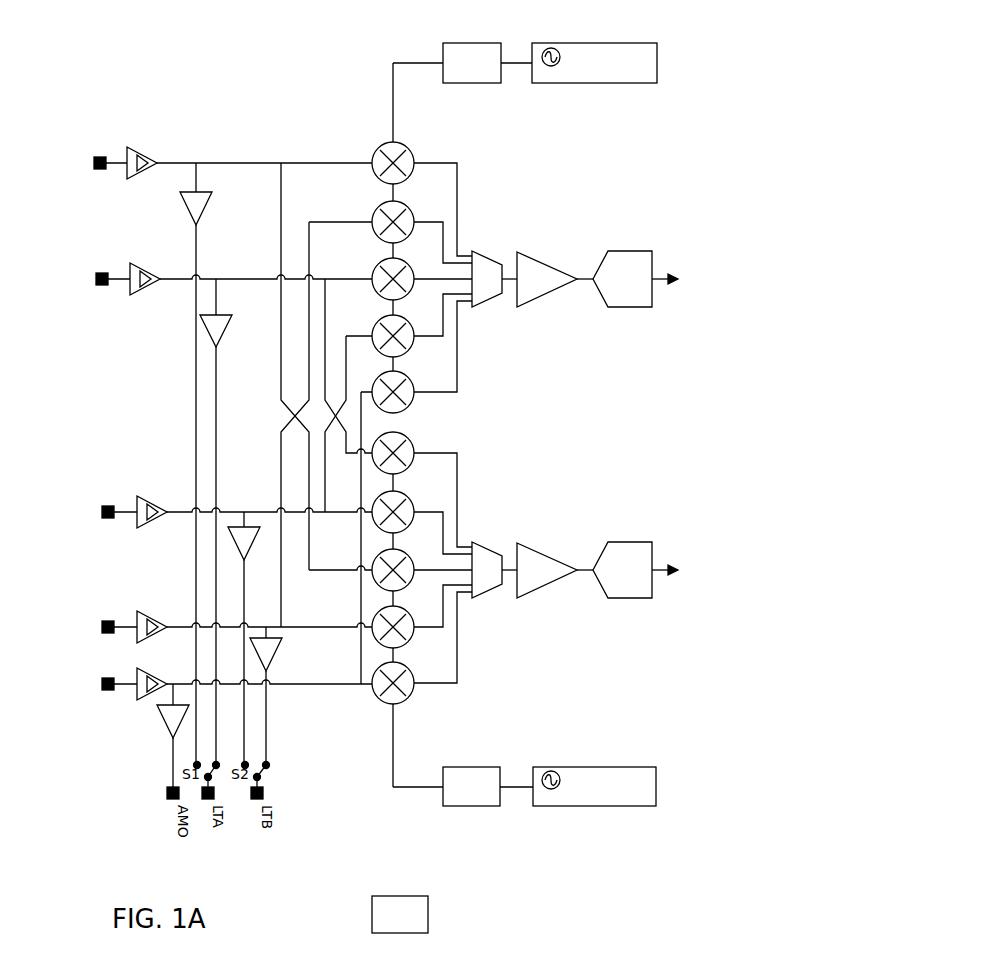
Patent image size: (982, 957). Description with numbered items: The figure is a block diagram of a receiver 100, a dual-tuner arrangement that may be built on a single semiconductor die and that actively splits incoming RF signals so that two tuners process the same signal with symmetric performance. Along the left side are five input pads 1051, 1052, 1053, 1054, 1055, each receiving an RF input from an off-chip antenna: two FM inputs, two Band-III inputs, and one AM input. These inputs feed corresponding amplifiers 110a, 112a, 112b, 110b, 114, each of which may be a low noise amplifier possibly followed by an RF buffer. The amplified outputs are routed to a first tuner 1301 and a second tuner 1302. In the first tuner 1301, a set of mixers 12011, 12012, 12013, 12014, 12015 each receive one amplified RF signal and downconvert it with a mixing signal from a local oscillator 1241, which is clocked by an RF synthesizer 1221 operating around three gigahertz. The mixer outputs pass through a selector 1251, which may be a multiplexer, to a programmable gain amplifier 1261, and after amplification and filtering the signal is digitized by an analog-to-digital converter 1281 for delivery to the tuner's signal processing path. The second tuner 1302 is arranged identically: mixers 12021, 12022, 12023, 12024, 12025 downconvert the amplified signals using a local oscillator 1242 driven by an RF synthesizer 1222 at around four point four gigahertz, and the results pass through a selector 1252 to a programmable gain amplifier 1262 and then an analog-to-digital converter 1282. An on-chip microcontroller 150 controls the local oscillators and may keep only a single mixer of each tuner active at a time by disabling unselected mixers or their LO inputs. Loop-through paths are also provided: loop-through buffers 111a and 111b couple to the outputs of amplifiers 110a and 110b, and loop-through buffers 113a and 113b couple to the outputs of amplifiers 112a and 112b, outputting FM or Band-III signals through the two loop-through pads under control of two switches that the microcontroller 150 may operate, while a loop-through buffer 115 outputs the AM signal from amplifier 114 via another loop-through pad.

The receiver 100 is at (119, 50).
The input pad 1051 is at (94, 163).
The input pad 1052 is at (96, 279).
The input pad 1053 is at (102, 512).
The input pad 1054 is at (102, 627).
The input pad 1055 is at (102, 684).
The amplifier 110a is at (140, 179).
The amplifier 110b is at (150, 643).
The loop-through buffer 111a is at (207, 207).
The loop-through buffer 111b is at (276, 650).
The amplifier 112a is at (143, 295).
The amplifier 112b is at (150, 528).
The loop-through buffer 113a is at (227, 329).
The loop-through buffer 113b is at (254, 543).
The amplifier 114 is at (150, 700).
The loop-through buffer 115 is at (165, 728).
The mixer 12011 is at (374, 151).
The mixer 12012 is at (374, 210).
The mixer 12013 is at (374, 267).
The mixer 12014 is at (374, 324).
The mixer 12015 is at (406, 378).
The mixer 12021 is at (408, 468).
The mixer 12022 is at (408, 527).
The mixer 12023 is at (408, 585).
The mixer 12024 is at (408, 642).
The mixer 12025 is at (408, 698).
The RF synthesizer 1221 is at (592, 43).
The RF synthesizer 1222 is at (593, 767).
The local oscillator 1241 is at (473, 43).
The local oscillator 1242 is at (473, 767).
The selector 1251 is at (482, 256).
The selector 1252 is at (482, 547).
The programmable gain amplifier 1261 is at (540, 262).
The programmable gain amplifier 1262 is at (540, 553).
The analog-to-digital converter 1281 is at (626, 251).
The analog-to-digital converter 1282 is at (626, 542).
The first tuner 1301 is at (652, 199).
The second tuner 1302 is at (652, 490).
The microcontroller 150 is at (428, 912).